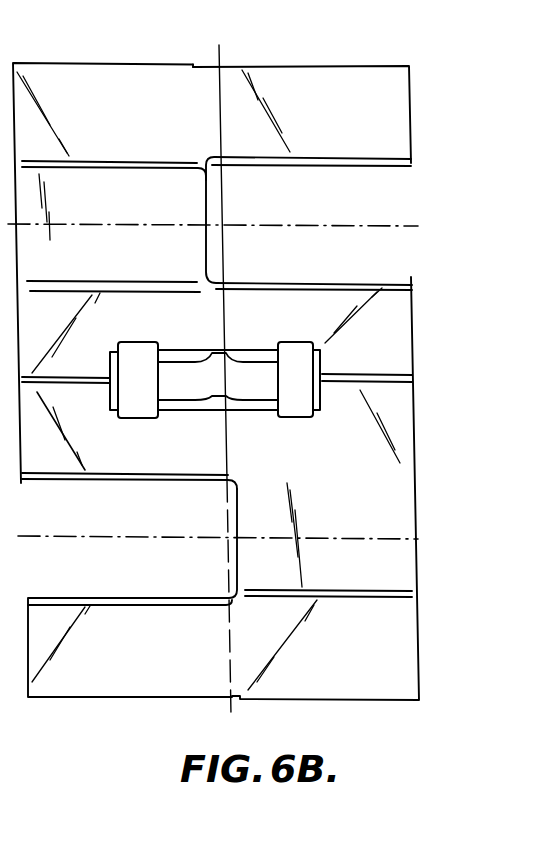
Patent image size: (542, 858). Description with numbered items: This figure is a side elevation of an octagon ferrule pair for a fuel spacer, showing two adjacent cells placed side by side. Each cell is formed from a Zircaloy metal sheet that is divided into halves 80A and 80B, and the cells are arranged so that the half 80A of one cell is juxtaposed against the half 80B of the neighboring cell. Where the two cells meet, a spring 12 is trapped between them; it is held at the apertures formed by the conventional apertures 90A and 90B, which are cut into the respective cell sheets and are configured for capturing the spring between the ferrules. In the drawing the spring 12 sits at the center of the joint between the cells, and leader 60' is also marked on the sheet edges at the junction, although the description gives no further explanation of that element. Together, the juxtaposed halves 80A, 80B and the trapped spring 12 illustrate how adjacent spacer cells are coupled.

The cell half 80A is at (125, 189).
The cell half 80B is at (375, 125).
The flange 60' is at (217, 346).
The spring 12 is at (300, 397).
The aperture 90A is at (238, 412).
The aperture 90B is at (223, 350).